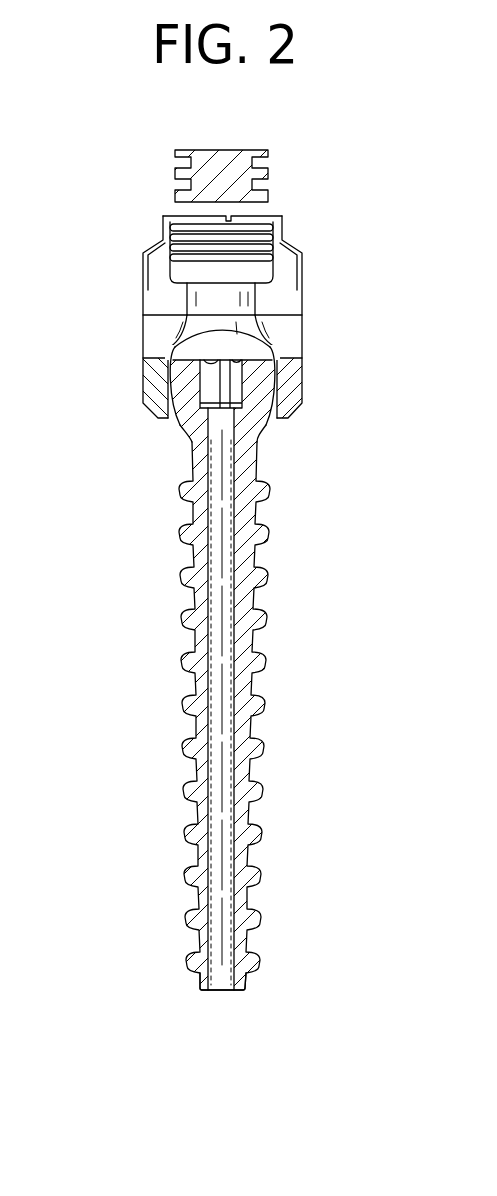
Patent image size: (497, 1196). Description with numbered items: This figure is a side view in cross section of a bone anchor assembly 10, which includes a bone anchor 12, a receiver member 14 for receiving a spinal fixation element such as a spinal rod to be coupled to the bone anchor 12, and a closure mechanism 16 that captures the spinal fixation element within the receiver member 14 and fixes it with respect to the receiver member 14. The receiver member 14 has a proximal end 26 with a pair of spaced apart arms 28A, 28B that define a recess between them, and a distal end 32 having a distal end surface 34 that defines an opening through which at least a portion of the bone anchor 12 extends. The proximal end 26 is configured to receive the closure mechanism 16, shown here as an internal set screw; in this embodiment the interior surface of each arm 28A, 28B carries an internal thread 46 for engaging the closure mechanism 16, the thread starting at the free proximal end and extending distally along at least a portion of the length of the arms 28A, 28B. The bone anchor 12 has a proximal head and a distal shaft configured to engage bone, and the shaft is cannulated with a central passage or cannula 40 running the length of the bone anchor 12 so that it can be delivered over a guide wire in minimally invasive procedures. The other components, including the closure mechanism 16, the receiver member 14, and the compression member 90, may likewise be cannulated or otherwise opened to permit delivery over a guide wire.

The bone anchor assembly 10 is at (316, 478).
The bone anchor 12 is at (142, 520).
The receiver member 14 is at (287, 302).
The closure mechanism 16 is at (255, 150).
The proximal end 26 is at (130, 233).
The arm 28A is at (160, 298).
The arm 28B is at (283, 260).
The distal end 32 is at (302, 382).
The distal end surface 34 is at (275, 422).
The cannula 40 is at (222, 988).
The internal thread 46 is at (287, 228).
The compression member 90 is at (275, 352).